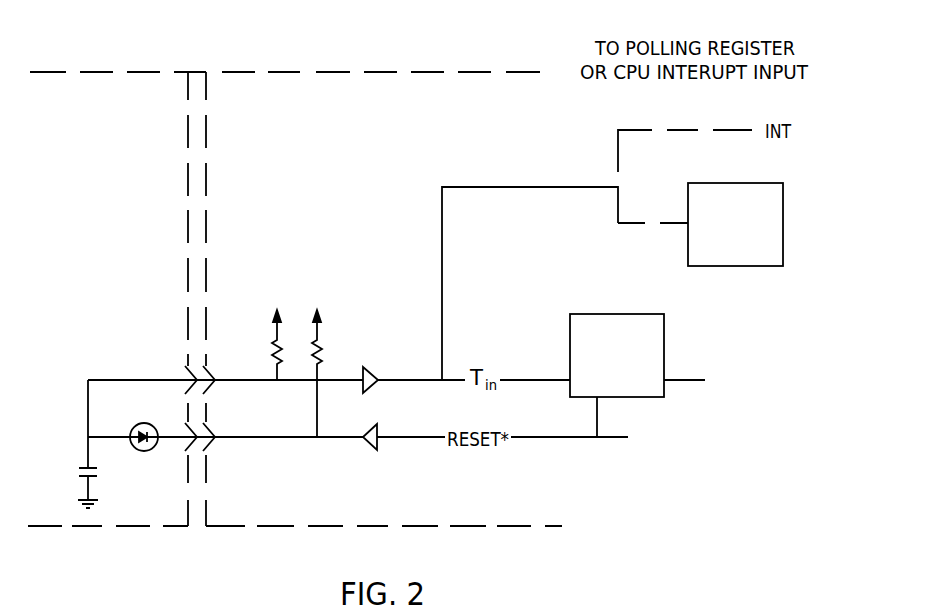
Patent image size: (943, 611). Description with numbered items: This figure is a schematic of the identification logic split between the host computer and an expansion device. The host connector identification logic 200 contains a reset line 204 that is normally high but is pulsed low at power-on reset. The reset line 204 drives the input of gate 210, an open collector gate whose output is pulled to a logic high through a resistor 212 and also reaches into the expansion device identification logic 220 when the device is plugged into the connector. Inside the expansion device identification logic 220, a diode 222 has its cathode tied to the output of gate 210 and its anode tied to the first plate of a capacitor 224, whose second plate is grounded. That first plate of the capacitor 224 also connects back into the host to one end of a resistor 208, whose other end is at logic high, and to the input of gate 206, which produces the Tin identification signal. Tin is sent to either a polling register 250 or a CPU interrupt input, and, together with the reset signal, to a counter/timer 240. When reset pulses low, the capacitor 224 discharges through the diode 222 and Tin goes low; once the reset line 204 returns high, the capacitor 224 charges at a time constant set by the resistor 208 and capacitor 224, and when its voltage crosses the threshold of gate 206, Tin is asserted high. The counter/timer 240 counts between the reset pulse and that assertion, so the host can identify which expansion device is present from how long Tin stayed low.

The host connector identification logic 200 is at (383, 51).
The reset line 204 is at (412, 440).
The gate 206 is at (366, 366).
The resistor 208 is at (274, 343).
The gate 210 is at (380, 426).
The resistor 212 is at (320, 345).
The expansion device identification logic 220 is at (70, 59).
The diode 222 is at (140, 452).
The capacitor 224 is at (80, 465).
The counter/timer 240 is at (603, 313).
The polling register 250 is at (735, 266).